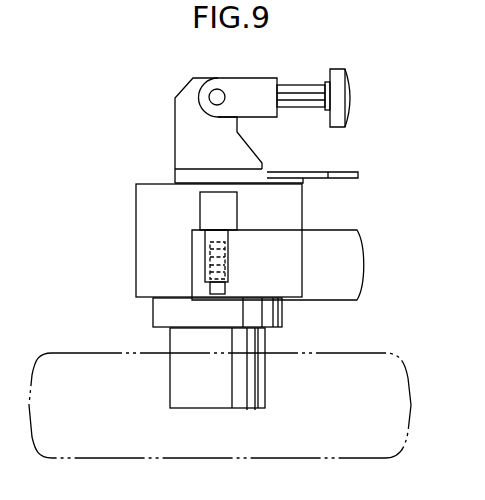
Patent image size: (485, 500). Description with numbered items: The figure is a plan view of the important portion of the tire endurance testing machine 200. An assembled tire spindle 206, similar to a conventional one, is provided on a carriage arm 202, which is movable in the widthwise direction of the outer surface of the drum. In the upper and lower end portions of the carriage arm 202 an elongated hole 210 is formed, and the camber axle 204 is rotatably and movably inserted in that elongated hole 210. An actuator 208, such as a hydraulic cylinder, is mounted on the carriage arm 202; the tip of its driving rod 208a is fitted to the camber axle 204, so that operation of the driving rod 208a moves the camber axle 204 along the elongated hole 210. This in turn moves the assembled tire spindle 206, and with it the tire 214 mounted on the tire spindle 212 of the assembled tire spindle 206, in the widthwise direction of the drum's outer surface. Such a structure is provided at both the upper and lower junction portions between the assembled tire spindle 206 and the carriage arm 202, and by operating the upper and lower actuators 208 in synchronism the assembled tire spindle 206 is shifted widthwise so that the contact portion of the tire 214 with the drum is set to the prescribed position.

The tire endurance testing machine 200 is at (152, 69).
The carriage arm 202 is at (347, 248).
The camber axle 204 is at (225, 263).
The assembled tire spindle 206 is at (136, 200).
The actuator 208 is at (207, 208).
The driving rod 208a is at (207, 238).
The elongated hole 210 is at (218, 294).
The tire spindle 212 is at (208, 397).
The tire 214 is at (389, 360).